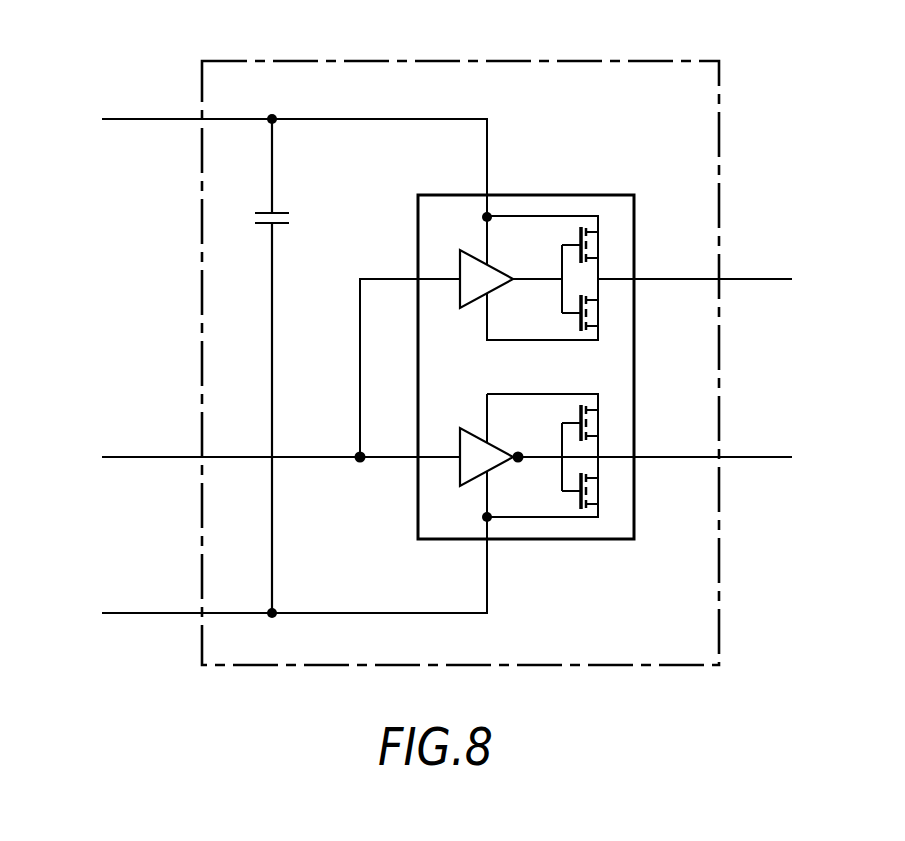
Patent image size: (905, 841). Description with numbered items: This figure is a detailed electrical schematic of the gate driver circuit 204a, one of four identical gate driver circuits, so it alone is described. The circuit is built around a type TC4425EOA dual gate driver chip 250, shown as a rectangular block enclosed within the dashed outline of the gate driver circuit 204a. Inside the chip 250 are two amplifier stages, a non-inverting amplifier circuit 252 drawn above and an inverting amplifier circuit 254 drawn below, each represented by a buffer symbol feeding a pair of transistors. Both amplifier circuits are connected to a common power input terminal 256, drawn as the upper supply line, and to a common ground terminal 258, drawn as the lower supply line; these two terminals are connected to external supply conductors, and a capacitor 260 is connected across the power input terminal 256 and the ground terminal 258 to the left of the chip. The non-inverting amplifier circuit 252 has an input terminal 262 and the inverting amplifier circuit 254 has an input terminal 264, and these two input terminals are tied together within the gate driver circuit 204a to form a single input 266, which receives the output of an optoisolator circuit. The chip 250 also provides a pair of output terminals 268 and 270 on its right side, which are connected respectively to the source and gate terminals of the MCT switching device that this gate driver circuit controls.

The gate driver circuit 204a is at (683, 61).
The dual gate driver chip 250 is at (634, 240).
The non-inverting amplifier circuit 252 is at (460, 265).
The inverting amplifier circuit 254 is at (460, 443).
The common power input terminal 256 is at (373, 119).
The common ground terminal 258 is at (395, 613).
The capacitor 260 is at (278, 210).
The input terminal 262 is at (402, 278).
The input terminal 264 is at (397, 458).
The single input 266 is at (168, 457).
The output terminal 268 is at (735, 279).
The output terminal 270 is at (735, 457).